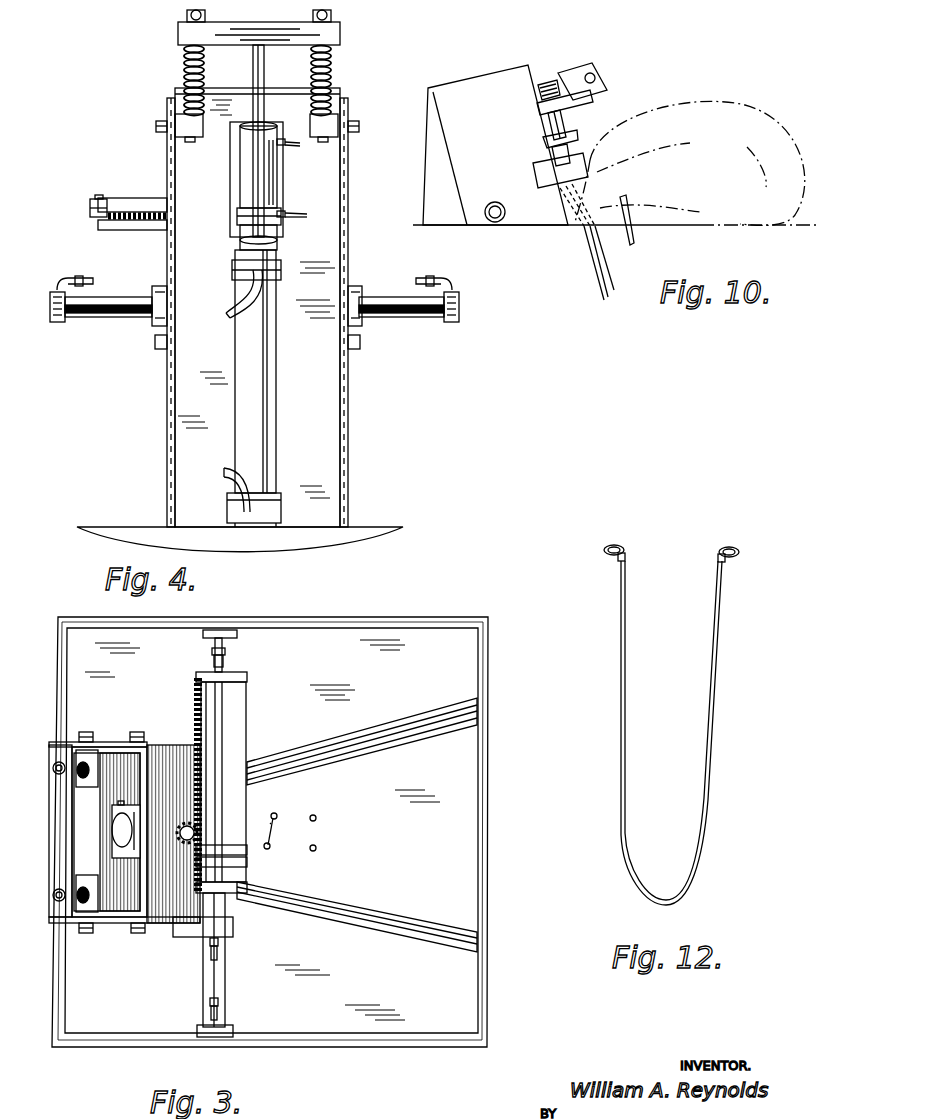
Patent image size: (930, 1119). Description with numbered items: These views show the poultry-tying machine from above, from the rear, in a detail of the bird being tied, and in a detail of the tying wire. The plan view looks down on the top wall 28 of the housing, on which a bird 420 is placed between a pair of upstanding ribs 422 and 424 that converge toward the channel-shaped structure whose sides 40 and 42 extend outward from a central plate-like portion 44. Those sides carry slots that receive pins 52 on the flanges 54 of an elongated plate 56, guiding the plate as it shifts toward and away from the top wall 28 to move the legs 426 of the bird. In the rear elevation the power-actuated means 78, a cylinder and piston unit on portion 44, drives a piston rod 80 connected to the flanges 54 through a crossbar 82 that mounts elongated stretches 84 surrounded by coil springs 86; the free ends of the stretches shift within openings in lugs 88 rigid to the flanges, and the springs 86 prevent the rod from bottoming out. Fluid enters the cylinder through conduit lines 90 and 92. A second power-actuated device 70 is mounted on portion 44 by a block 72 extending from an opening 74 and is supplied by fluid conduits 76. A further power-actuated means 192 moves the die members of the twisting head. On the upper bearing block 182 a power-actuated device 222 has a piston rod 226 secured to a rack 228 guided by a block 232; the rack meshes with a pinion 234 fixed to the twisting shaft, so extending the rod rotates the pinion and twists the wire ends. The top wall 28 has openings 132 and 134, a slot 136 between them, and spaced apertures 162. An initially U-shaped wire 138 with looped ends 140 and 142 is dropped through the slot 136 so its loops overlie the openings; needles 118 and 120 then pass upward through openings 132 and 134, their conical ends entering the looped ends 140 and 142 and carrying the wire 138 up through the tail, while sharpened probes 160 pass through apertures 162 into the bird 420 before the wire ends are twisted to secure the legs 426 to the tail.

In FIG. 10, the top wall 28 is at (795, 226).
In FIG. 4, the side of channel-shaped structure 40 is at (345, 432).
In FIG. 4, the side of channel-shaped structure 42 is at (170, 428).
In FIG. 4, the plate-like portion 44 is at (320, 392).
In FIG. 4, the pins 52 is at (157, 126).
In FIG. 3, the pins 52 is at (87, 735).
In FIG. 4, the flanges 54 is at (170, 170).
In FIG. 3, the flanges 54 is at (115, 925).
In FIG. 10, the elongated plate 56 is at (562, 72).
In FIG. 4, the power-actuated device 70 is at (245, 186).
In FIG. 3, the power-actuated device 70 is at (120, 825).
In FIG. 4, the block 72 is at (283, 228).
In FIG. 4, the opening 74 is at (276, 183).
In FIG. 3, the opening 74 is at (130, 858).
In FIG. 4, the fluid conduits 76 is at (292, 148).
In FIG. 4, the power-actuated means 78 is at (270, 365).
In FIG. 4, the piston rod 80 is at (264, 108).
In FIG. 4, the crossbar 82 is at (240, 34).
In FIG. 3, the crossbar 82 is at (55, 790).
In FIG. 4, the elongated stretches 84 is at (200, 12).
In FIG. 3, the elongated stretches 84 is at (53, 768).
In FIG. 4, the coil springs 86 is at (184, 66).
In FIG. 3, the coil springs 86 is at (80, 760).
In FIG. 4, the lugs 88 is at (182, 135).
In FIG. 4, the conduit line 90 is at (226, 302).
In FIG. 4, the conduit line 92 is at (222, 472).
In FIG. 10, the needle 118 is at (596, 293).
In FIG. 10, the needle 120 is at (610, 290).
In FIG. 3, the opening 132 is at (270, 848).
In FIG. 3, the opening 134 is at (278, 826).
In FIG. 3, the slot 136 is at (268, 830).
In FIG. 12, the wire 138 is at (708, 735).
In FIG. 12, the looped end 140 is at (614, 545).
In FIG. 12, the looped end 142 is at (732, 546).
In FIG. 10, the probes 160 is at (640, 238).
In FIG. 3, the apertures 162 is at (316, 817).
In FIG. 3, the upper bearing block 182 is at (188, 865).
In FIG. 4, the power-actuated means 192 is at (98, 298).
In FIG. 4, the power-actuated device 222 is at (138, 196).
In FIG. 3, the power-actuated device 222 is at (235, 740).
In FIG. 3, the piston rod 226 is at (245, 865).
In FIG. 4, the rack 228 is at (128, 225).
In FIG. 3, the rack 228 is at (194, 700).
In FIG. 4, the block 232 is at (96, 198).
In FIG. 3, the block 232 is at (240, 680).
In FIG. 3, the pinion 234 is at (180, 825).
In FIG. 10, the bird 420 is at (692, 108).
In FIG. 3, the rib 422 is at (410, 925).
In FIG. 3, the rib 424 is at (400, 740).
In FIG. 10, the legs 426 is at (583, 160).